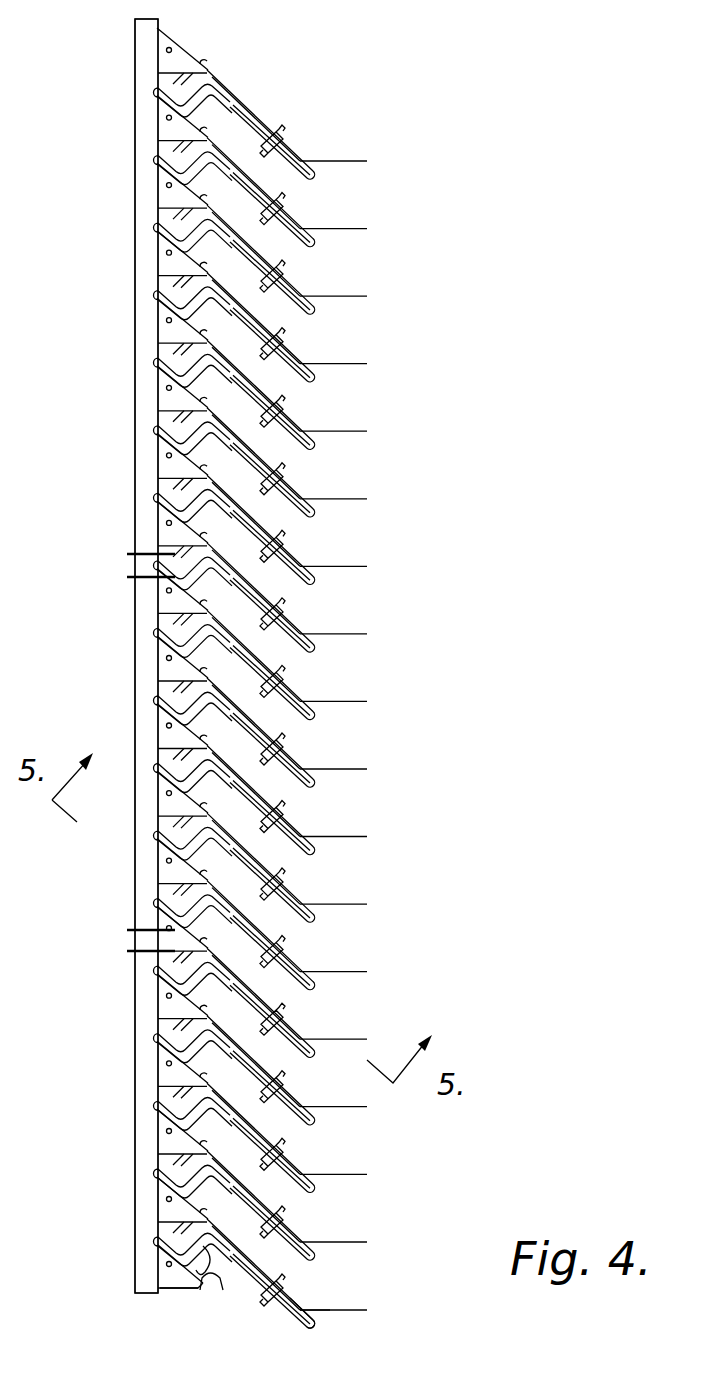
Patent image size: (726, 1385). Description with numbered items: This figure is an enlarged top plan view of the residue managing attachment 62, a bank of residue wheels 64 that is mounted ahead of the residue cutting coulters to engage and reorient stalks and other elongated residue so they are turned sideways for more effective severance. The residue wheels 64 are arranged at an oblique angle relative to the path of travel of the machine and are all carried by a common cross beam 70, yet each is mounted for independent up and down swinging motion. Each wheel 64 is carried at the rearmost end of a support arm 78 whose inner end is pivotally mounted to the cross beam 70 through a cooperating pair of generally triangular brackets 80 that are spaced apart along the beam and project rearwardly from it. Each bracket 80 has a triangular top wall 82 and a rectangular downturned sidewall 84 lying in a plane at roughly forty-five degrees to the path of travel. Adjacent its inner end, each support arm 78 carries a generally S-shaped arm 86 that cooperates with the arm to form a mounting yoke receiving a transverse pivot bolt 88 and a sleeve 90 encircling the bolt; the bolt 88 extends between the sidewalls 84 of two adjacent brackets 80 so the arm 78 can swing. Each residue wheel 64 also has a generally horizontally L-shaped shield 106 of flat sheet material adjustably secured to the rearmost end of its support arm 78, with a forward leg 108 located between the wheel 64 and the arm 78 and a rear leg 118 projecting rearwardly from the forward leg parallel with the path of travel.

The residue managing attachment 62 is at (118, 156).
The cross beam 70 is at (145, 1013).
The bracket 80 is at (154, 1204).
The pivot bolt 88 is at (205, 1210).
The sleeve 90 is at (183, 1227).
The S-shaped arm 86 is at (187, 1267).
The triangular top wall 82 is at (192, 1286).
The downturned sidewall 84 is at (223, 1290).
The support arm 78 is at (270, 1263).
The forward leg 108 is at (300, 1298).
The shield 106 is at (376, 1300).
The rear leg 118 is at (353, 1308).
The residue wheel 64 is at (300, 1324).